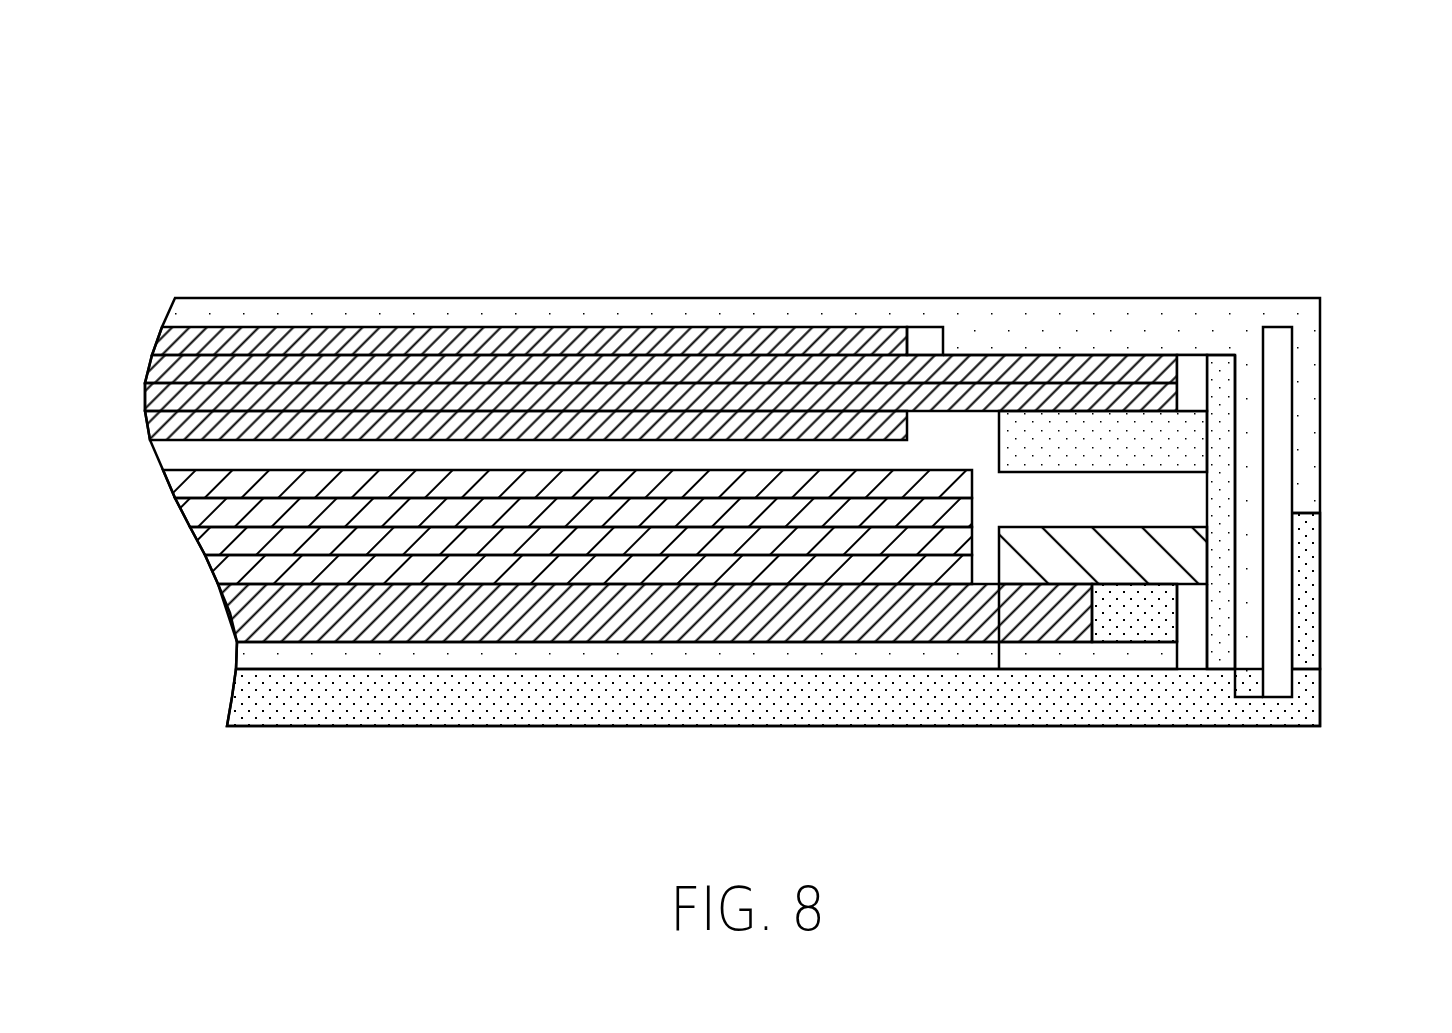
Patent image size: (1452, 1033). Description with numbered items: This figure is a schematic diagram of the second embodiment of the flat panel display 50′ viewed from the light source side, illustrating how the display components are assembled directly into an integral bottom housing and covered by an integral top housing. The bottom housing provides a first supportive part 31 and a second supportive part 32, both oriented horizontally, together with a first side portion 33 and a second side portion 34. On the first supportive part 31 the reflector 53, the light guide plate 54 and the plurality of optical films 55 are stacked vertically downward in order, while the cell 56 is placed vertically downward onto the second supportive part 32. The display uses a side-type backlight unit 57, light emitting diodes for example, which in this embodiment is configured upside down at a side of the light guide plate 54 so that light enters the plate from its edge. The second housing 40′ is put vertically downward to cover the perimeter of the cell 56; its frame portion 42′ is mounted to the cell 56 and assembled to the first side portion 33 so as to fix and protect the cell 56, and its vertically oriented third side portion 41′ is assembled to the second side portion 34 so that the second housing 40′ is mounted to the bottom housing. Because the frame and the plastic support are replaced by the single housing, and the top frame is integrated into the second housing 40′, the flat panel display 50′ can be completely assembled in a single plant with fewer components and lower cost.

The flat panel display 50′ is at (1311, 138).
The second housing 40′ is at (832, 275).
The cell 56 is at (665, 400).
The optical films 55 is at (558, 568).
The light guide plate 54 is at (683, 617).
The reflector 53 is at (787, 655).
The first supportive part 31 is at (901, 698).
The second side portion 34 is at (1303, 593).
The second supportive part 32 is at (1050, 440).
The first side portion 33 is at (1222, 375).
The frame portion 42′ is at (1196, 348).
The third side portion 41′ is at (1303, 472).
The backlight unit 57 is at (1050, 568).